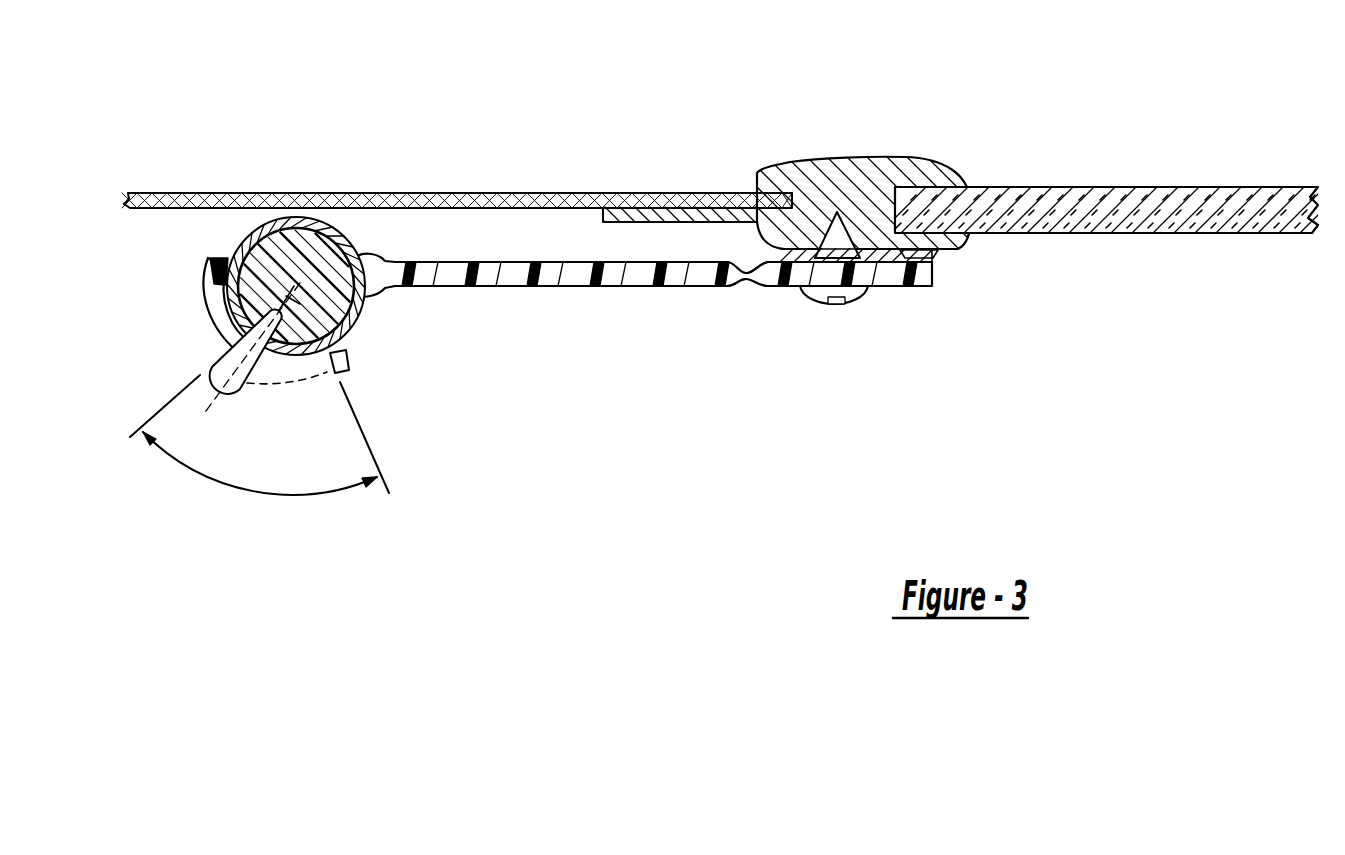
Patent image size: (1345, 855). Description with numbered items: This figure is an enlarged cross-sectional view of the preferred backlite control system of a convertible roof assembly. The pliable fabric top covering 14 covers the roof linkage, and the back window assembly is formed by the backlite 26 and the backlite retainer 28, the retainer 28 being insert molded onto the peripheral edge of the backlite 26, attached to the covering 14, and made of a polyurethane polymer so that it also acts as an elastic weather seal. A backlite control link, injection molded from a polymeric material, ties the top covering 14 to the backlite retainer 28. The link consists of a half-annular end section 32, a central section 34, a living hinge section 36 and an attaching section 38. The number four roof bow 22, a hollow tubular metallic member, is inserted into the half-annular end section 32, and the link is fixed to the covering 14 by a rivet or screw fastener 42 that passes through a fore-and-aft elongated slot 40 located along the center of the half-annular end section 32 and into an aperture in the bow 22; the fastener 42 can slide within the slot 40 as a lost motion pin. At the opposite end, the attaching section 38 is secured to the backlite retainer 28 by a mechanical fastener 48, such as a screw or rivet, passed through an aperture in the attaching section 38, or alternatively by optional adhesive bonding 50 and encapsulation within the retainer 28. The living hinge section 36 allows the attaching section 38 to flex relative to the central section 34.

The pliable fabric top covering 14 is at (613, 192).
The number four roof bow 22 is at (343, 237).
The backlite 26 is at (1160, 187).
The backlite retainer 28 is at (877, 157).
The half-annular end section 32 is at (207, 305).
The central section 34 is at (497, 266).
The living hinge section 36 is at (735, 287).
The attaching section 38 is at (768, 274).
The elongated slot 40 is at (300, 372).
The fastener 42 is at (203, 353).
The mechanical fastener 48 is at (850, 305).
The adhesive bonding 50 is at (920, 253).